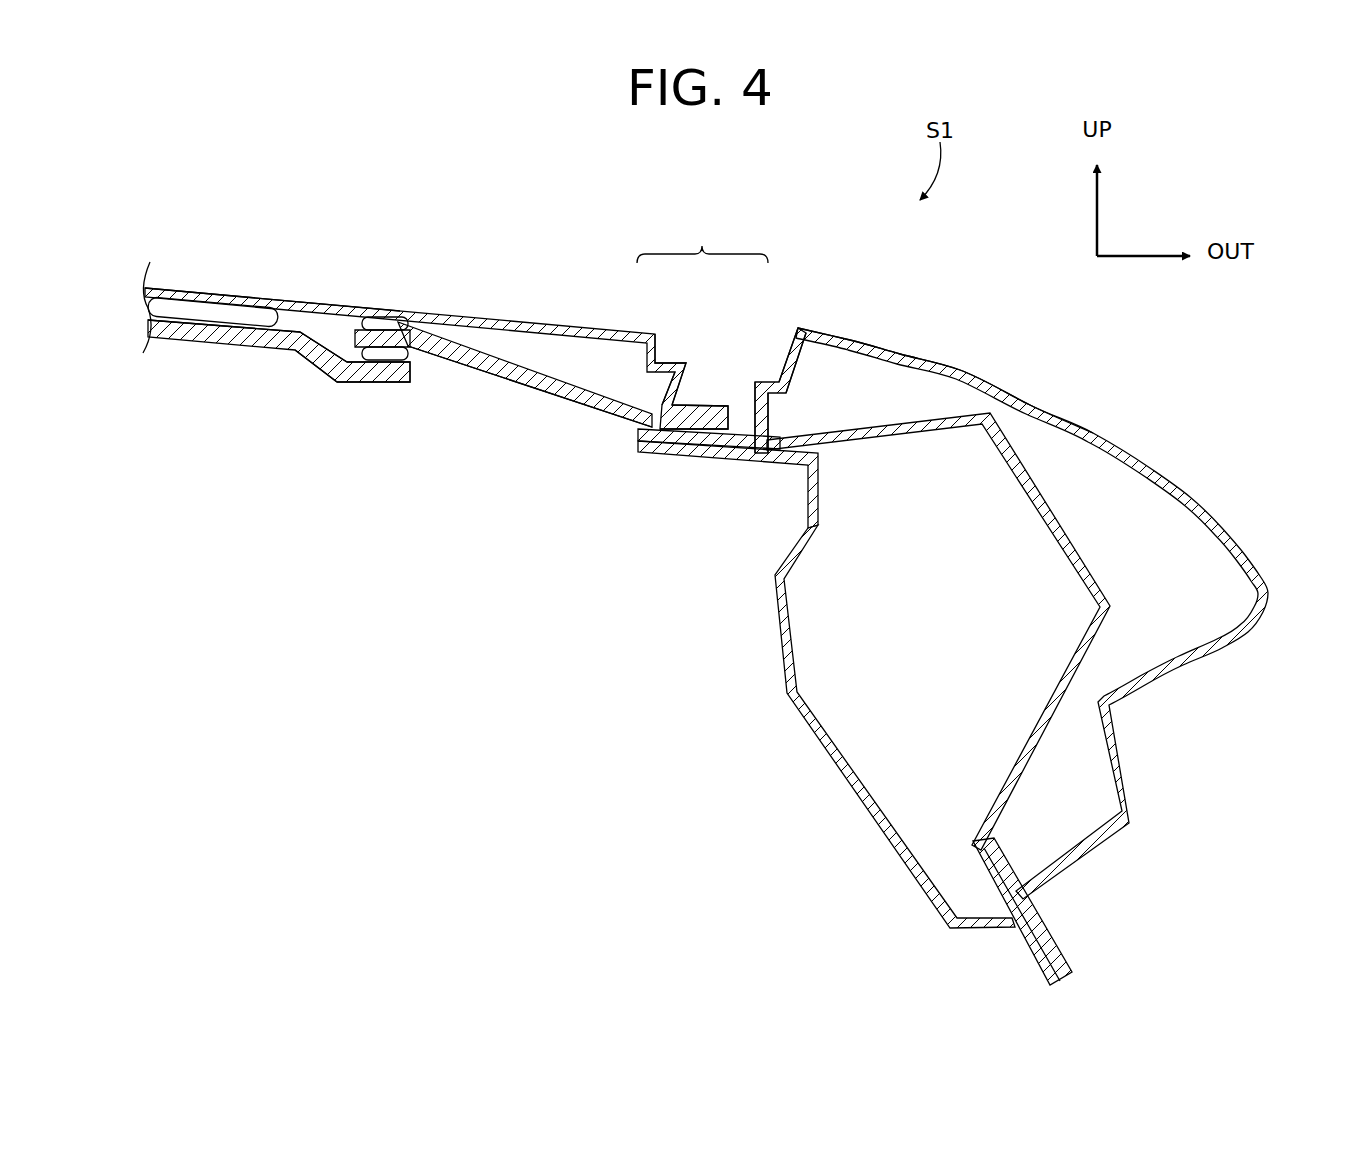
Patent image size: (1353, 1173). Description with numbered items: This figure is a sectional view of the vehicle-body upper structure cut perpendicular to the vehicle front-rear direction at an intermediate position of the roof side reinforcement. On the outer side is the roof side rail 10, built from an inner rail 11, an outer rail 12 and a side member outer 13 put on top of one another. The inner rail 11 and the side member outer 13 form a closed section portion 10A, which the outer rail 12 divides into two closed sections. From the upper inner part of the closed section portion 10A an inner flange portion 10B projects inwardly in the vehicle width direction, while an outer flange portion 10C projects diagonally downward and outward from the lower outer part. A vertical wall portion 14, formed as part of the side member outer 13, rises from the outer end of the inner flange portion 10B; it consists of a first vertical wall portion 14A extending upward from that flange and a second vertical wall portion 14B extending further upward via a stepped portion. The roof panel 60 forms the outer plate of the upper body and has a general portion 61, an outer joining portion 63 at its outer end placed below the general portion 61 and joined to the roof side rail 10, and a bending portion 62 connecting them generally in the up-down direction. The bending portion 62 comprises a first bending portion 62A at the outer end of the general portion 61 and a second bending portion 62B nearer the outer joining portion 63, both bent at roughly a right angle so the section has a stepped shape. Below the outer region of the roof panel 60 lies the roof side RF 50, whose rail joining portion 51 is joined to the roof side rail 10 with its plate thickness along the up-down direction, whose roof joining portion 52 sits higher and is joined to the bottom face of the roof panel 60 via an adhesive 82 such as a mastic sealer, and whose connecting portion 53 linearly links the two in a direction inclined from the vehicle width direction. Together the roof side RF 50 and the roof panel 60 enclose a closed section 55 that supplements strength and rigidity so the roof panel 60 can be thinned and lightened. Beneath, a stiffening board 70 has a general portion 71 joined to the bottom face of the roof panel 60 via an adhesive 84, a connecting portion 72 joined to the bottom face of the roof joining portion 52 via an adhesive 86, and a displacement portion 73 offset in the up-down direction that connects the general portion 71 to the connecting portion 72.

The roof side rail 10 is at (1072, 408).
The closed section portion 10A is at (955, 365).
The inner flange portion 10B is at (690, 457).
The outer flange portion 10C is at (1068, 940).
The inner rail 11 is at (836, 776).
The outer rail 12 is at (1048, 540).
The side member outer 13 is at (1148, 458).
The vertical wall portion 14 is at (782, 368).
The first vertical wall portion 14A is at (770, 428).
The second vertical wall portion 14B is at (792, 372).
The roof side RF 50 is at (508, 377).
The rail joining portion 51 is at (660, 446).
The roof joining portion 52 is at (402, 328).
The connecting portion 53 is at (551, 381).
The closed section 55 is at (571, 353).
The roof panel 60 is at (318, 296).
The general portion 61 is at (232, 292).
The bending portion 62 is at (700, 322).
The first bending portion 62A is at (657, 345).
The second bending portion 62B is at (700, 402).
The outer joining portion 63 is at (700, 398).
The stiffening board 70 is at (172, 342).
The general portion 71 is at (222, 350).
The connecting portion 72 is at (388, 384).
The displacement portion 73 is at (315, 374).
The adhesive 82 is at (383, 315).
The adhesive 84 is at (170, 300).
The adhesive 86 is at (412, 359).